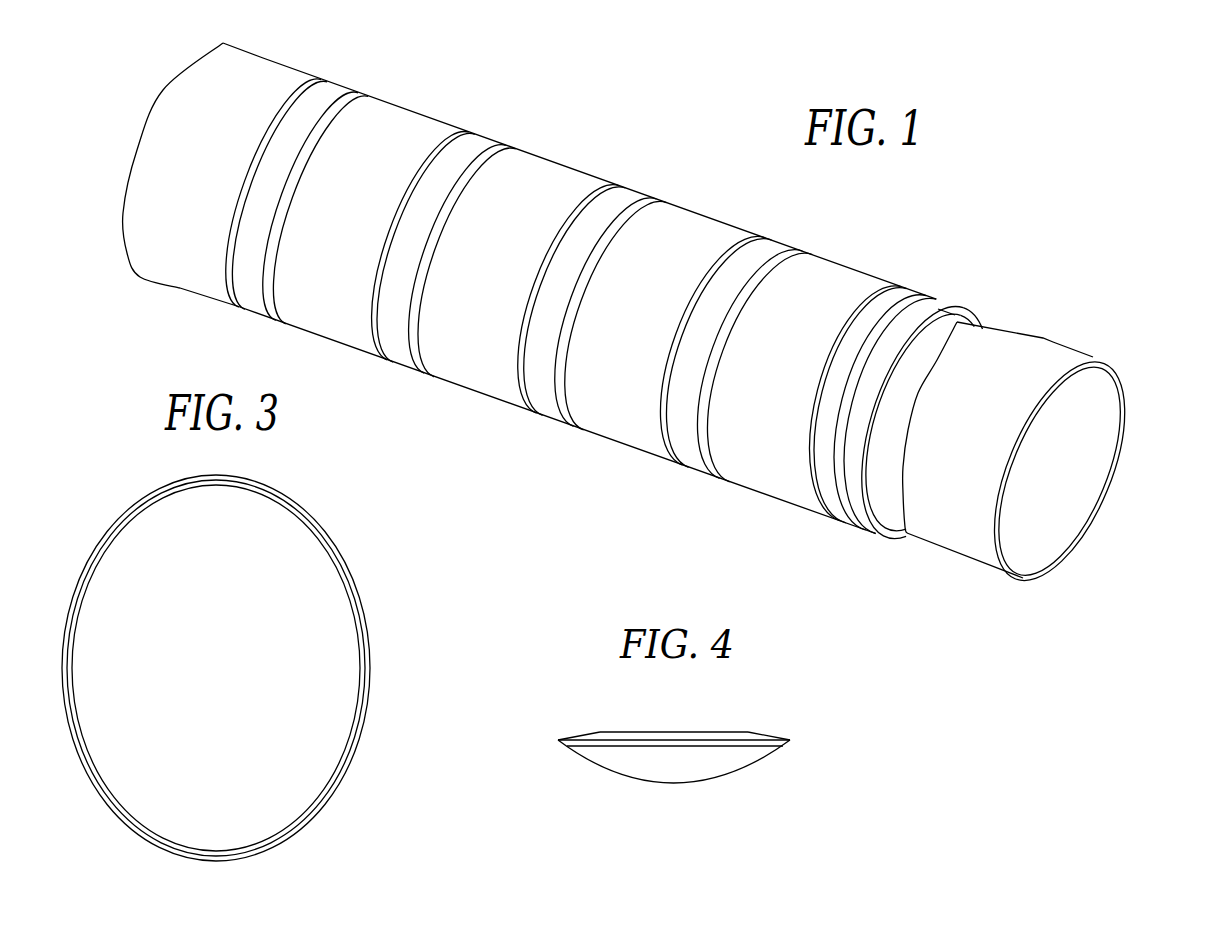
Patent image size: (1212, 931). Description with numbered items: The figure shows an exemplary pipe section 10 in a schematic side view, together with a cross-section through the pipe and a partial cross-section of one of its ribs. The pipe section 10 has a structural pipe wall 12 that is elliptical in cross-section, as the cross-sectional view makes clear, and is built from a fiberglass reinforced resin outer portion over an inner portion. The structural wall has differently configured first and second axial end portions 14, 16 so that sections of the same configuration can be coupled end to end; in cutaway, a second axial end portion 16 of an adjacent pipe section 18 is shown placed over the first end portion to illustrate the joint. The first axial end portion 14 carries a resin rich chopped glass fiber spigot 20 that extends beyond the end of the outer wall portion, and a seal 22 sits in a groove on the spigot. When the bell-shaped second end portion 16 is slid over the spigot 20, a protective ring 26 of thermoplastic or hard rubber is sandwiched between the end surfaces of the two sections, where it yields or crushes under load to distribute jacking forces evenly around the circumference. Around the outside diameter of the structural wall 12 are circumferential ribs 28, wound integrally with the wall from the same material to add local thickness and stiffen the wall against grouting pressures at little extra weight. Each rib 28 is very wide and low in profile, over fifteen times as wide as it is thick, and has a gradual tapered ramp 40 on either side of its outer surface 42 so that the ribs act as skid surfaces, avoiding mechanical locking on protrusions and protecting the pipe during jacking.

In FIG. 1, the pipe section 10 is at (553, 142).
In FIG. 1, the structural pipe wall 12 is at (478, 368).
In FIG. 3, the structural pipe wall 12 is at (327, 537).
In FIG. 1, the first axial end portion 14 is at (900, 324).
In FIG. 1, the second axial end portion 16 is at (162, 93).
In FIG. 1, the adjacent pipe section 18 is at (1068, 565).
In FIG. 1, the spigot 20 is at (843, 528).
In FIG. 1, the seal 22 is at (832, 470).
In FIG. 1, the protective ring 26 is at (980, 317).
In FIG. 1, the ribs 28 is at (468, 150).
In FIG. 4, the ribs 28 is at (697, 735).
In FIG. 4, the ramp 40 is at (600, 736).
In FIG. 4, the outer surface 42 is at (673, 732).